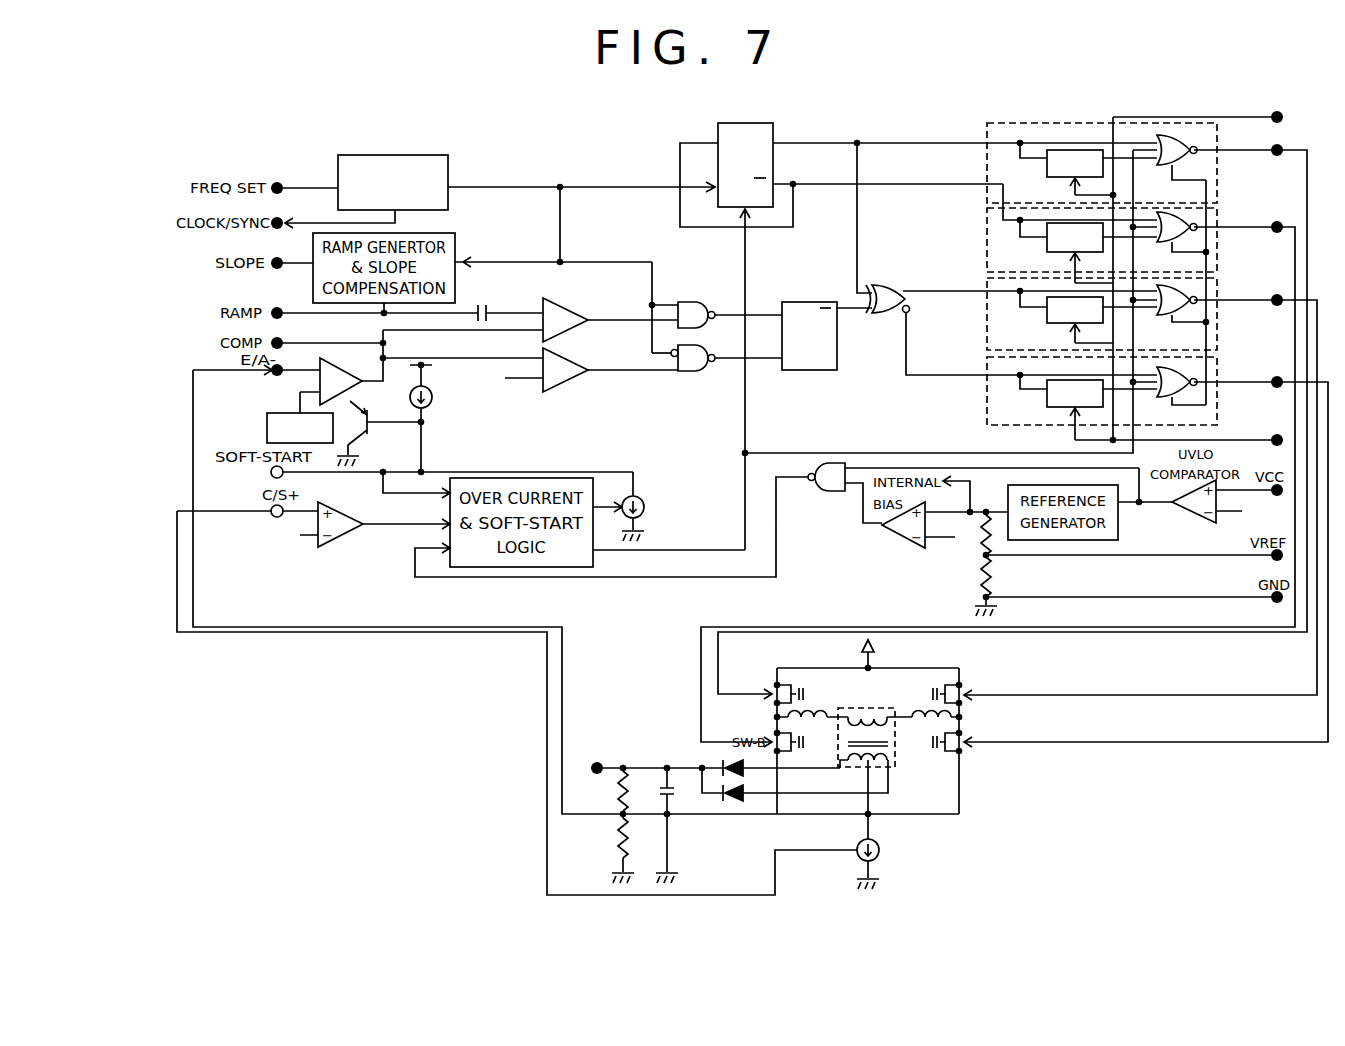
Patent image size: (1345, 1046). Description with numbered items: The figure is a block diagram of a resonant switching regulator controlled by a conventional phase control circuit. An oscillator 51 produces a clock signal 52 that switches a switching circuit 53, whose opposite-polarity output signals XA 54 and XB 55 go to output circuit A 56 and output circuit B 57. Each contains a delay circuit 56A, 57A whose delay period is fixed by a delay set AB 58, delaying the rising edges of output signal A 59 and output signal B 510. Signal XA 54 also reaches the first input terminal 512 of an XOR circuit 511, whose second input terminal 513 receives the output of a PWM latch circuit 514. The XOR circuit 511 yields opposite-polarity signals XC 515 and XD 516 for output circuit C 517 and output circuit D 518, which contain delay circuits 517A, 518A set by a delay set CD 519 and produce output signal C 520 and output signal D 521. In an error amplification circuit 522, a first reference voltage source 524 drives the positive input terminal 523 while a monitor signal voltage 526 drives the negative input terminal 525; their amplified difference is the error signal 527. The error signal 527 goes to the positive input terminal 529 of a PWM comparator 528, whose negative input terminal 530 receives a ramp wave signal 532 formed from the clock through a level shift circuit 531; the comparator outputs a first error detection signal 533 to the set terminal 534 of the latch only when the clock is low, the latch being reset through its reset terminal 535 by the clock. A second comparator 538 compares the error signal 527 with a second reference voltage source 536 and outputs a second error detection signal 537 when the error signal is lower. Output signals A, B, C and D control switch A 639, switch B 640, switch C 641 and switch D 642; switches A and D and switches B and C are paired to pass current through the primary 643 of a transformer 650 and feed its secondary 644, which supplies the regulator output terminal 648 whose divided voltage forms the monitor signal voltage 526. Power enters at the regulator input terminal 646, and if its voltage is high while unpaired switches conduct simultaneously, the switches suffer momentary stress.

The oscillator 51 is at (395, 155).
The clock signal 52 is at (520, 187).
The switching circuit 53 is at (760, 123).
The output signal XA 54 is at (925, 143).
The output signal XB 55 is at (930, 184).
The output circuit A 56 is at (1012, 123).
The delay circuit 56A is at (1080, 150).
The output circuit B 57 is at (987, 216).
The delay circuit 57A is at (1047, 247).
The delay set AB 58 is at (1283, 117).
The output signal A 59 is at (1277, 157).
The output signal B 510 is at (1277, 234).
The XOR circuit 511 is at (893, 283).
The first input terminal 512 is at (876, 290).
The second input terminal 513 is at (866, 312).
The PWM latch circuit 514 is at (806, 302).
The output signal XC 515 is at (952, 291).
The output signal XD 516 is at (906, 377).
The output circuit C 517 is at (987, 320).
The delay circuit 517A is at (1047, 318).
The output circuit D 518 is at (987, 424).
The delay circuit 518A is at (1047, 401).
The delay set CD 519 is at (1277, 446).
The output signal C 520 is at (1277, 307).
The output signal D 521 is at (1278, 376).
The error amplification circuit 522 is at (333, 365).
The positive input terminal 523 is at (320, 392).
The first reference voltage source 524 is at (267, 428).
The negative input terminal 525 is at (318, 343).
The monitor signal voltage 526 is at (195, 373).
The error signal 527 is at (470, 331).
The PWM comparator 528 is at (575, 300).
The positive input terminal 529 is at (543, 337).
The negative input terminal 530 is at (543, 311).
The level shift circuit 531 is at (482, 305).
The ramp wave signal 532 is at (300, 313).
The first error detection signal 533 is at (621, 323).
The set terminal 534 is at (770, 262).
The reset terminal 535 is at (782, 353).
The second reference voltage source 536 is at (519, 410).
The second error detection signal 537 is at (662, 373).
The comparator 538 is at (576, 390).
The switch A 639 is at (785, 692).
The switch B 640 is at (800, 752).
The switch C 641 is at (975, 697).
The switch D 642 is at (975, 744).
The primary 643 is at (866, 716).
The secondary 644 is at (885, 766).
The regulator input terminal 646 is at (866, 664).
The regulator output terminal 648 is at (591, 768).
The transformer 650 is at (897, 742).